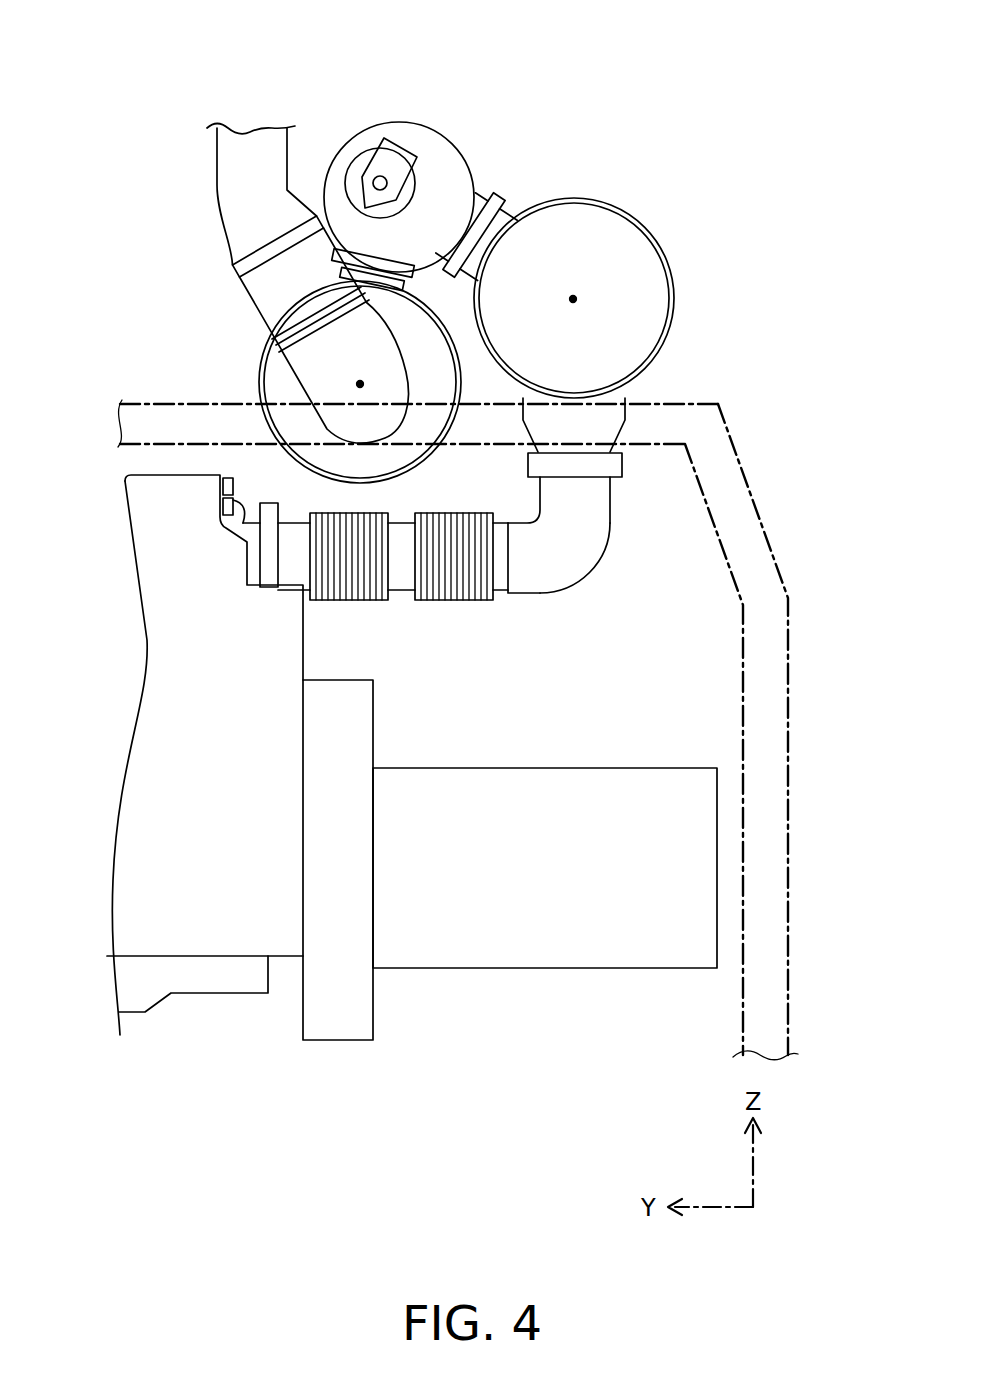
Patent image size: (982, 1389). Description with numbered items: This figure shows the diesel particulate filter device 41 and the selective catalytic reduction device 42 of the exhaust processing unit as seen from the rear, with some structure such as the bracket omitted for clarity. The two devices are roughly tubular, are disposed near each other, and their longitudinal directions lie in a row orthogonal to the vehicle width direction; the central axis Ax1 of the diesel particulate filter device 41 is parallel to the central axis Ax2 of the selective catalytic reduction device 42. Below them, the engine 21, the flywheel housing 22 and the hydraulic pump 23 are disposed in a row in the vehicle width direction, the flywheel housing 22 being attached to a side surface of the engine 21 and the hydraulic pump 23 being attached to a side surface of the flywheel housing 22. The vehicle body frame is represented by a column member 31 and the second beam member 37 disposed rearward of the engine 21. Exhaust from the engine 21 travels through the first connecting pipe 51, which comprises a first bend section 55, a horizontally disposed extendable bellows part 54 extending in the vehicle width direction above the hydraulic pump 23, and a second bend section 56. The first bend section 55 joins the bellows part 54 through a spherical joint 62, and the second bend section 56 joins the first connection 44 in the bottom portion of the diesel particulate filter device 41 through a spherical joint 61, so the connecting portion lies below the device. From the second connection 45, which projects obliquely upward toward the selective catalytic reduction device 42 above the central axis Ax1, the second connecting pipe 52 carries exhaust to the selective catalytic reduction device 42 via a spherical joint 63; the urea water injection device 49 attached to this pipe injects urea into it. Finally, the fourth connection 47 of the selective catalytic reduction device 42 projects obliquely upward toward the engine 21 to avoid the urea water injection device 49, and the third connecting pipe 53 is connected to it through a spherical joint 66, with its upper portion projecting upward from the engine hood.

The engine 21 is at (208, 932).
The flywheel housing 22 is at (339, 1017).
The hydraulic pump 23 is at (672, 953).
The column member 31 is at (790, 703).
The second beam member 37 is at (165, 400).
The diesel particulate filter device 41 is at (558, 233).
The selective catalytic reduction device 42 is at (277, 382).
The first connection 44 is at (582, 457).
The second connection 45 is at (513, 218).
The fourth connection 47 is at (283, 287).
The urea water injection device 49 is at (393, 153).
The first connecting pipe 51 is at (510, 605).
The second connecting pipe 52 is at (422, 123).
The third connecting pipe 53 is at (232, 153).
The bellows part 54 is at (432, 590).
The first bend section 55 is at (222, 503).
The second bend section 56 is at (580, 560).
The spherical joint 61 is at (617, 468).
The spherical joint 62 is at (270, 560).
The spherical joint 63 is at (487, 196).
The spherical joint 66 is at (280, 243).
The central axis of the diesel particulate filter device Ax1 is at (573, 299).
The central axis of the selective catalytic reduction device Ax2 is at (360, 384).